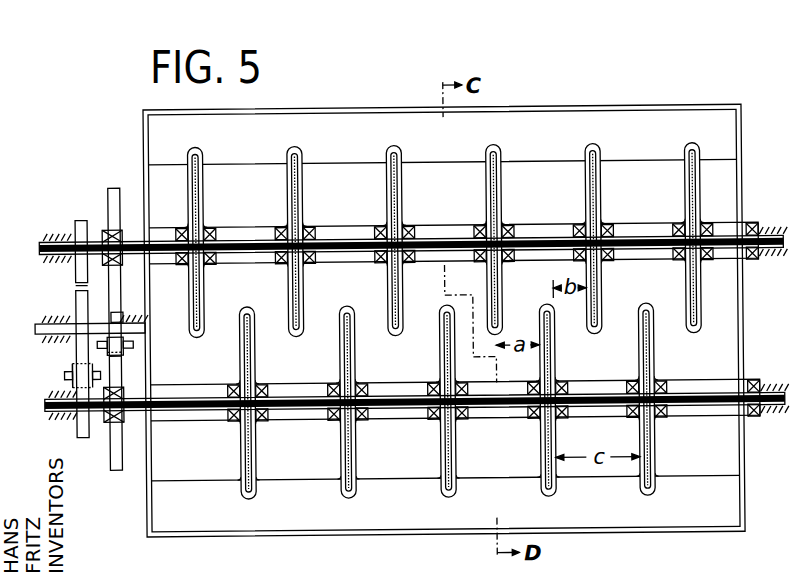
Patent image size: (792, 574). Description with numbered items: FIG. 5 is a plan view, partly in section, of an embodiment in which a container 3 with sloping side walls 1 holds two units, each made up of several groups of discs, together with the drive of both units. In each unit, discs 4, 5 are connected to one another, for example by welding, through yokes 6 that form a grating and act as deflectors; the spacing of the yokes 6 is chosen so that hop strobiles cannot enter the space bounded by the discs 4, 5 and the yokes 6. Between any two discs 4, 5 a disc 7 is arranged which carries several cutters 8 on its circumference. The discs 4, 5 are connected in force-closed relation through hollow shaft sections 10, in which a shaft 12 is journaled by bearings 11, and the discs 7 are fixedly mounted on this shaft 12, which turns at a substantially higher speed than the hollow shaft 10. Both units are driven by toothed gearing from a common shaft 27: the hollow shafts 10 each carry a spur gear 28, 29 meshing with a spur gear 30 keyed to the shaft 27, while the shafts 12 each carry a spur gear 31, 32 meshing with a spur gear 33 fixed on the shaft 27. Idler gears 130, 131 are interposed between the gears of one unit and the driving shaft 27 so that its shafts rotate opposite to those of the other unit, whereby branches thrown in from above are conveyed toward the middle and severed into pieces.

The sloping side wall 1 is at (641, 117).
The container 3 is at (740, 192).
The disc 4 is at (188, 204).
The disc 5 is at (199, 203).
The yoke 6 is at (189, 158).
The disc 7 is at (199, 186).
The cutter 8 is at (203, 160).
The hollow shaft section 10 is at (353, 230).
The bearing 11 is at (281, 228).
The shaft 12 is at (351, 246).
The common shaft 27 is at (48, 323).
The spur gear 28 is at (117, 190).
The spur gear 29 is at (119, 358).
The spur gear 30 is at (118, 312).
The spur gear 31 is at (74, 378).
The spur gear 32 is at (80, 219).
The spur gear 33 is at (78, 297).
The idler gear 130 is at (125, 346).
The idler gear 131 is at (72, 363).